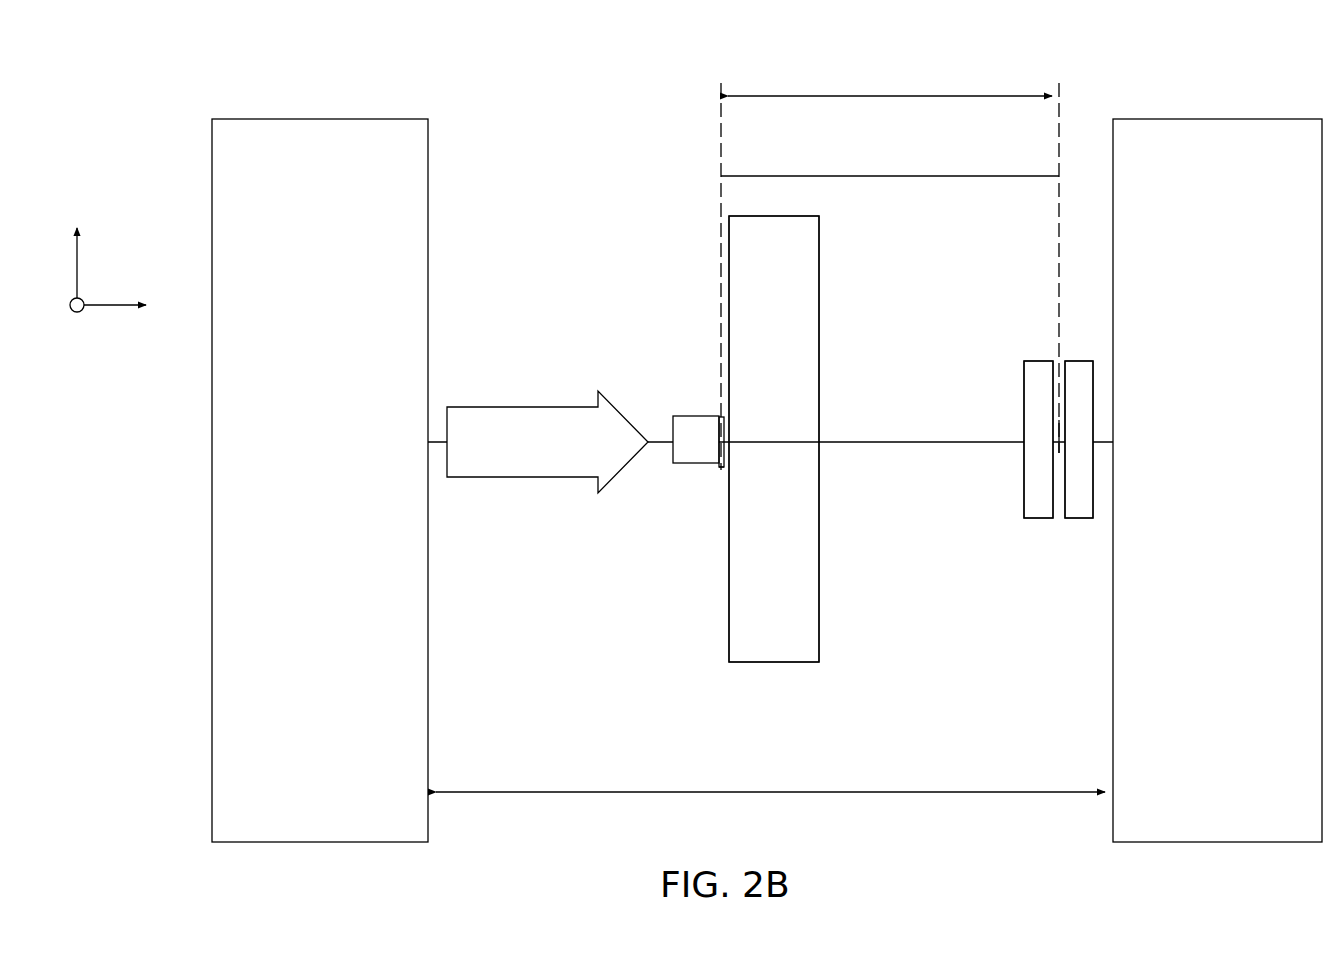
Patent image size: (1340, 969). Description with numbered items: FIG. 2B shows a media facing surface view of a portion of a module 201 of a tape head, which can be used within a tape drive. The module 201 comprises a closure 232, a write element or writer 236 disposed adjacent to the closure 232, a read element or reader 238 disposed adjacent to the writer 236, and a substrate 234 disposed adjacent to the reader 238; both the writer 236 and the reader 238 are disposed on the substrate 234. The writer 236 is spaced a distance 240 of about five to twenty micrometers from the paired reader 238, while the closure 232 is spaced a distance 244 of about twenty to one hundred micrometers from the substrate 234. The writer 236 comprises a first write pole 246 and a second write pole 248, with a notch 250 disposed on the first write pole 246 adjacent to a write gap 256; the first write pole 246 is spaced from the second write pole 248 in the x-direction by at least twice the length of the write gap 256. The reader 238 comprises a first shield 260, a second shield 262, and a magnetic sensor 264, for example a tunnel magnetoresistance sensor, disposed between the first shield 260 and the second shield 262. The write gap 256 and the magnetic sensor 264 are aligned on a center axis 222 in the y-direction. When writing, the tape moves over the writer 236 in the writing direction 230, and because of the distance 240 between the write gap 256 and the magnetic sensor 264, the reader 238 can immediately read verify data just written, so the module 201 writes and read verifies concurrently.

The module 201 is at (138, 78).
The center axis 222 is at (908, 442).
The writing direction 230 is at (619, 452).
The closure 232 is at (338, 489).
The substrate 234 is at (1240, 489).
The write element 236 is at (659, 344).
The read element 238 is at (1007, 343).
The distance 240 is at (893, 96).
The distance 244 is at (780, 790).
The first write pole P1 246 is at (791, 565).
The second write pole P2 248 is at (693, 462).
The notch 250 is at (726, 470).
The write gap 256 is at (718, 416).
The first shield S1 260 is at (1077, 497).
The second shield S2 262 is at (1042, 497).
The magnetic sensor 264 is at (1058, 437).